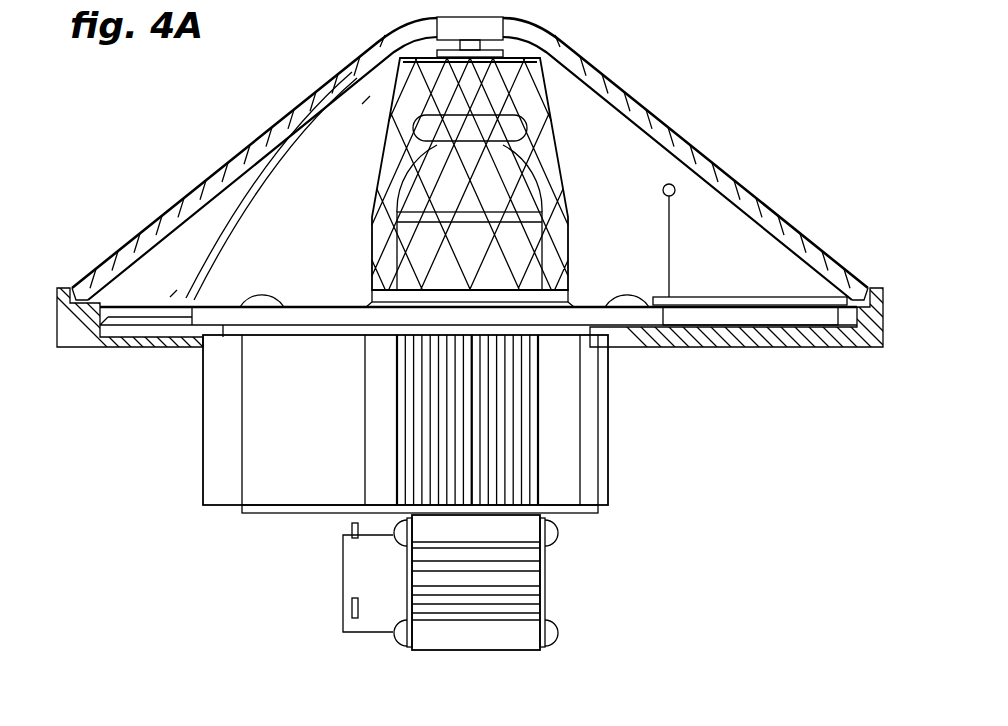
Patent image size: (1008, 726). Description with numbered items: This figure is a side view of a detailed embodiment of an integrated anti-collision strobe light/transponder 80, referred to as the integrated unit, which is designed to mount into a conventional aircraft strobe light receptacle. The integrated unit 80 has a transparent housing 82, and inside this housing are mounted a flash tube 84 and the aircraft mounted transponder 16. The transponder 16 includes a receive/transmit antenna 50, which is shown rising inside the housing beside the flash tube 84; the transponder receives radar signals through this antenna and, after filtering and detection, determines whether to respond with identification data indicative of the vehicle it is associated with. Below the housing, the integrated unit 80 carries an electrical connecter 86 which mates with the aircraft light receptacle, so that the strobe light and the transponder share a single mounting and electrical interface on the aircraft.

The integrated anti-collision strobe light/transponder 80 is at (178, 135).
The transparent housing 82 is at (680, 134).
The flash tube 84 is at (385, 150).
The receive/transmit antenna 50 is at (665, 217).
The aircraft mounted transponder 16 is at (752, 318).
The electrical connecter 86 is at (350, 573).